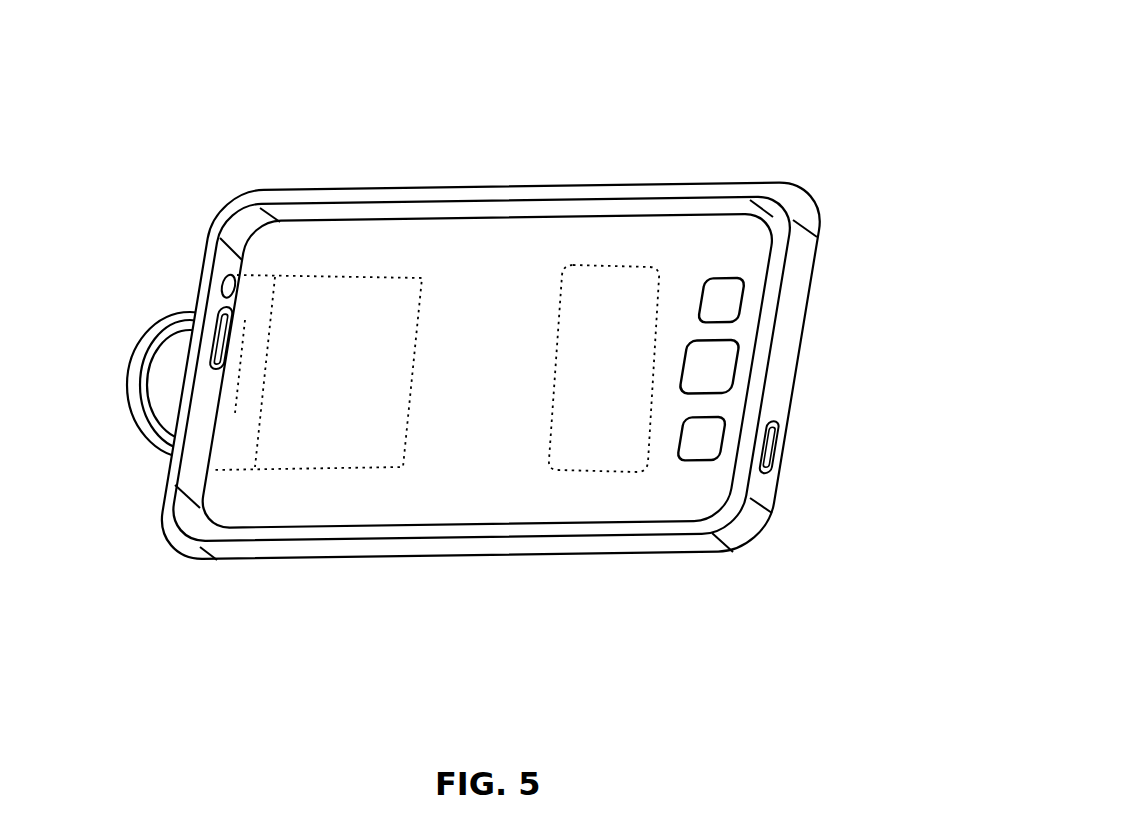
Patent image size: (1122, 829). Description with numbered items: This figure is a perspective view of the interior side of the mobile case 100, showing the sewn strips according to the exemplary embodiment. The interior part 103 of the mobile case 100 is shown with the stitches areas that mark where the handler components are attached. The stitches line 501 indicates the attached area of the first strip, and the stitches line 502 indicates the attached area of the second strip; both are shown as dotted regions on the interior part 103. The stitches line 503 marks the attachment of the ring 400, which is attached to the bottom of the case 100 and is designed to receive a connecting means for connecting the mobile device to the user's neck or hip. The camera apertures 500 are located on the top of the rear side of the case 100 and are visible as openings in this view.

The mobile case 100 is at (692, 95).
The interior side 103 is at (475, 275).
The ring 400 is at (140, 347).
The camera apertures 500 is at (717, 367).
The stitches line of the first strip 501 is at (605, 473).
The stitches line of the second strip 502 is at (327, 470).
The stitches line of the ring attachment 503 is at (223, 420).